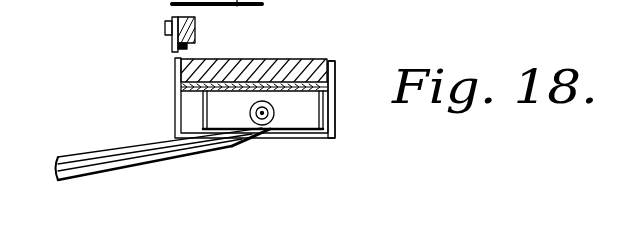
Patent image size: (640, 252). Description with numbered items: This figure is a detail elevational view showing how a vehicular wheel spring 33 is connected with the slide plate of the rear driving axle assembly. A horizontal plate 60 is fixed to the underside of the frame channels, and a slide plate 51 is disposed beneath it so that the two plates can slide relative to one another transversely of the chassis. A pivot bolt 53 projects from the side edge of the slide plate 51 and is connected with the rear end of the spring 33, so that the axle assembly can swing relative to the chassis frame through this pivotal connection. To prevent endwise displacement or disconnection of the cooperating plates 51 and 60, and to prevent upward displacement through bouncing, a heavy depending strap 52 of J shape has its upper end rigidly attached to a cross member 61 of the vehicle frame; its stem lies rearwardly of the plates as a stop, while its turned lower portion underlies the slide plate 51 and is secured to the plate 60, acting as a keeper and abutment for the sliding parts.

The spring 33 is at (135, 147).
The slide plate 51 is at (336, 72).
The depending strap 52 is at (336, 128).
The pivot bolt 53 is at (264, 101).
The horizontal plate 60 is at (284, 60).
The cross member 61 is at (196, 38).